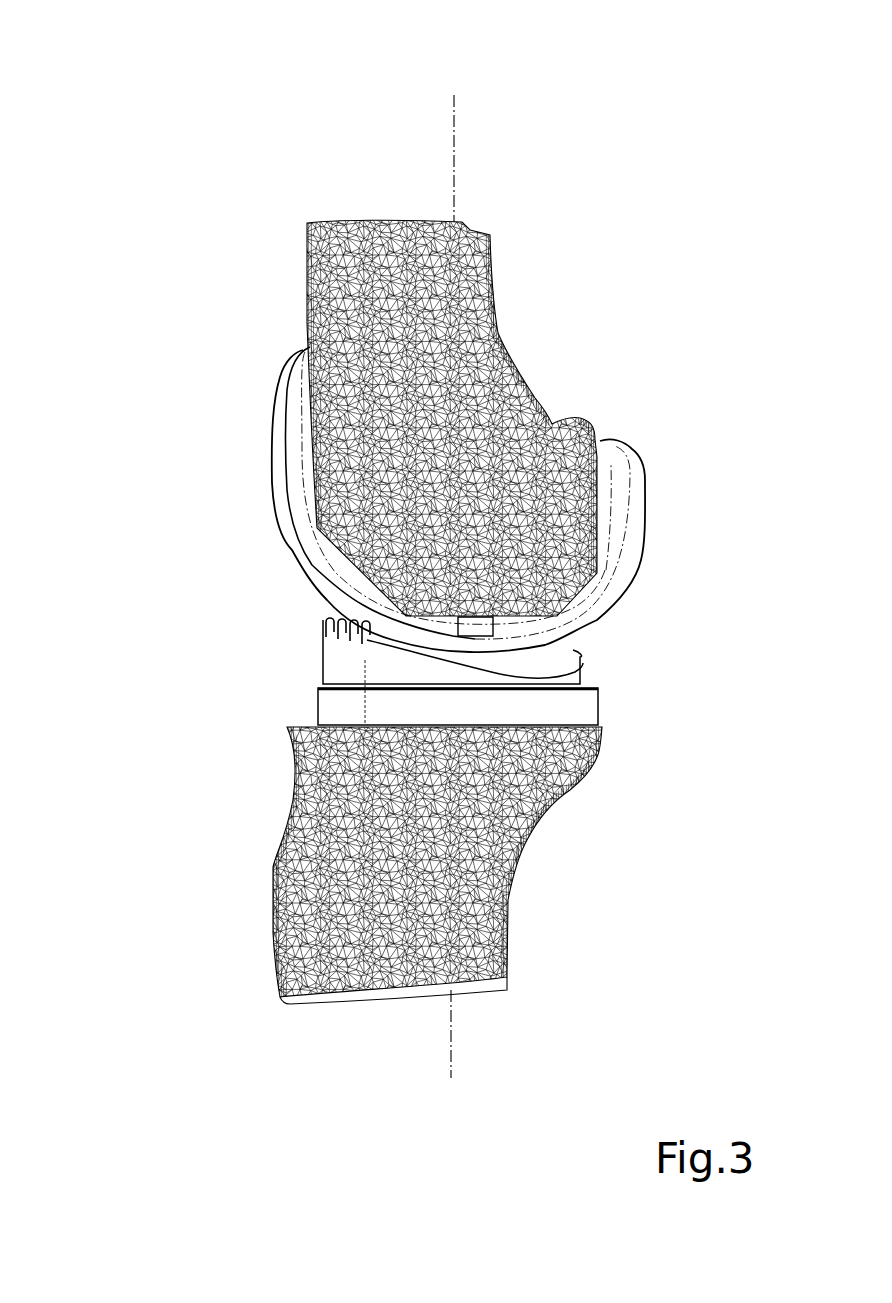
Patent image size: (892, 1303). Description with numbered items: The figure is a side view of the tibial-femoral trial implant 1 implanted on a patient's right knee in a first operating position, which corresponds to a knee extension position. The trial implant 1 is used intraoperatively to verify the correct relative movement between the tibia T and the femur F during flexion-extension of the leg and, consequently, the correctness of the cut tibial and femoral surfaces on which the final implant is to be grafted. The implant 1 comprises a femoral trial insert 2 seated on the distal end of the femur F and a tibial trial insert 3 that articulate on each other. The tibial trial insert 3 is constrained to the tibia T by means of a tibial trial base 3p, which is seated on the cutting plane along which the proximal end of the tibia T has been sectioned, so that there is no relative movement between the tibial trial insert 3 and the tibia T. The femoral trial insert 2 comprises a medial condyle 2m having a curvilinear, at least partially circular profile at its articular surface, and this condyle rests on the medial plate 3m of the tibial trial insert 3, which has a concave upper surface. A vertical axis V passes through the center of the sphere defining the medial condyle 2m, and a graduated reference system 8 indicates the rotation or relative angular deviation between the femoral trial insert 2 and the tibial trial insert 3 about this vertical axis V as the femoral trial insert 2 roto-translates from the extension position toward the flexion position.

The vertical axis V is at (455, 110).
The femur F is at (493, 300).
The tibia T is at (520, 872).
The tibial-femoral trial implant 1 is at (210, 477).
The femoral trial insert 2 is at (653, 477).
The medial condyle 2m is at (537, 633).
The tibial trial insert 3 is at (596, 663).
The medial plate 3m is at (393, 660).
The tibial trial base 3p is at (600, 708).
The graduated reference system 8 is at (327, 580).